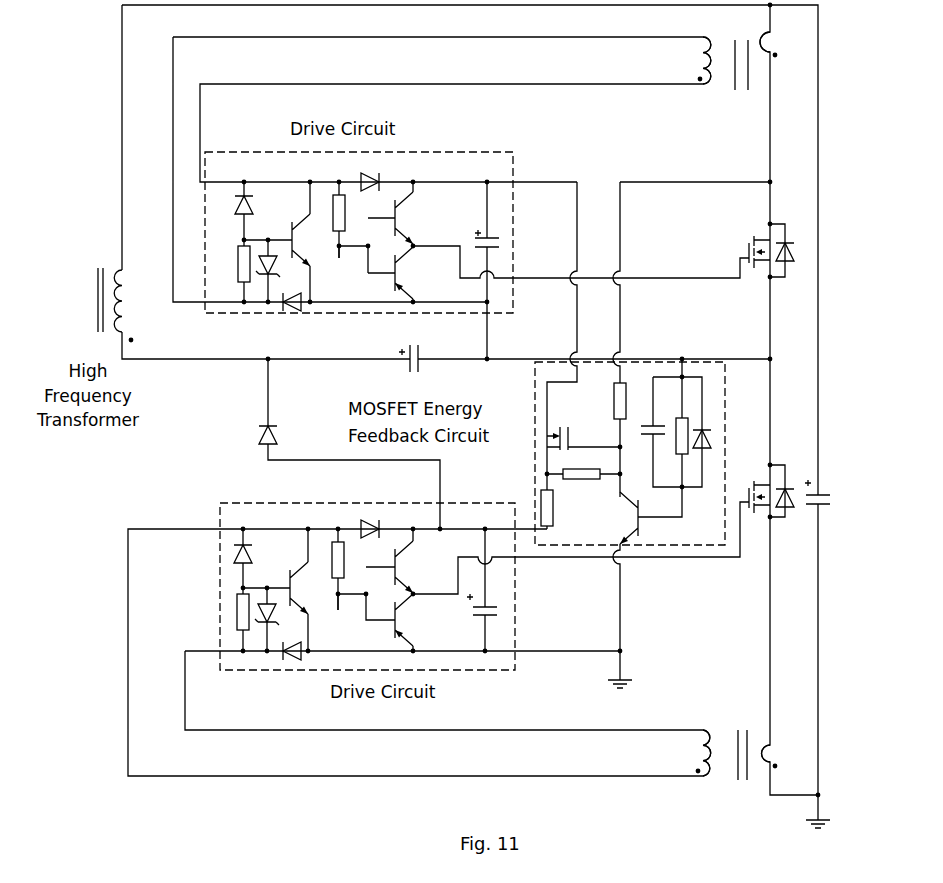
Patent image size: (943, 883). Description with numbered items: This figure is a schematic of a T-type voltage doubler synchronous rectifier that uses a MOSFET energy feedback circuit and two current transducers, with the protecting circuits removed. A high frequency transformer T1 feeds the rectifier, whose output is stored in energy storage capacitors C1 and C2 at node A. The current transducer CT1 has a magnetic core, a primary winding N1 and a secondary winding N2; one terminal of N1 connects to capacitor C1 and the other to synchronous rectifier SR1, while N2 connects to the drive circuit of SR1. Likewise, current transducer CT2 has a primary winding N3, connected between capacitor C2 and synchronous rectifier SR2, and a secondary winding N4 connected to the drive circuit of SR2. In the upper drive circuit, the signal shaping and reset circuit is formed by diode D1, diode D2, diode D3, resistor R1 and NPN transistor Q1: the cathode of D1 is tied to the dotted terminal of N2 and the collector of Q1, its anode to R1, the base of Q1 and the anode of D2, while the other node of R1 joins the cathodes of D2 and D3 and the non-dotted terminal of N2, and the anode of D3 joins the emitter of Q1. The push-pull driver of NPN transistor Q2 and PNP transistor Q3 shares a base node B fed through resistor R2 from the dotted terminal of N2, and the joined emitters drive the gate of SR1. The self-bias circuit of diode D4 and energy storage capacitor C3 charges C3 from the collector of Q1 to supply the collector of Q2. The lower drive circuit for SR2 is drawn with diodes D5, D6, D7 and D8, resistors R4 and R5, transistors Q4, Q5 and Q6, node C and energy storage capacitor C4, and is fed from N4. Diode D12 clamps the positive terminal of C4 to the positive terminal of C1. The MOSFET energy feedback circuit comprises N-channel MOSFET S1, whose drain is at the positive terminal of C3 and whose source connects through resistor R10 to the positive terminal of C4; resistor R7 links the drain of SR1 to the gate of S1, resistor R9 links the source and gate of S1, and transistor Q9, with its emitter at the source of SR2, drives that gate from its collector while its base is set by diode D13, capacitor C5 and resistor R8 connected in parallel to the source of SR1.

The high frequency transformer T1 is at (98, 287).
The primary winding N1 is at (783, 41).
The secondary winding N2 is at (702, 60).
The primary winding N3 is at (783, 748).
The secondary winding N4 is at (702, 753).
The current transducer CT1 is at (741, 75).
The current transducer CT2 is at (740, 744).
The diode D1 is at (257, 206).
The diode D2 is at (277, 266).
The diode D3 is at (293, 295).
The diode D4 is at (370, 188).
The diode D5 is at (256, 555).
The zener diode D6 is at (276, 614).
The diode D7 is at (293, 643).
The diode D8 is at (370, 535).
The diode D12 is at (281, 436).
The diode D13 is at (712, 421).
The resistor R1 is at (234, 264).
The resistor R2 is at (332, 210).
The resistor R4 is at (233, 612).
The resistor R5 is at (331, 557).
The resistor R7 is at (610, 401).
The resistor R8 is at (676, 424).
The resistor R9 is at (581, 484).
The resistor R10 is at (560, 508).
The NPN transistor Q1 is at (312, 240).
The NPN transistor Q2 is at (394, 218).
The PNP transistor Q3 is at (392, 274).
The transistor Q4 is at (311, 588).
The transistor Q5 is at (393, 567).
The transistor Q6 is at (391, 622).
The transistor Q9 is at (641, 518).
The energy storage capacitor C1 is at (406, 359).
The energy storage capacitor C2 is at (825, 501).
The energy storage capacitor C3 is at (493, 246).
The energy storage capacitor C4 is at (489, 613).
The capacitor C5 is at (652, 414).
The N-channel MOSFET S1 is at (583, 428).
The synchronous rectifier SR1 is at (767, 259).
The synchronous rectifier SR2 is at (767, 500).
The node A is at (781, 369).
The node B is at (338, 261).
The node C is at (337, 610).